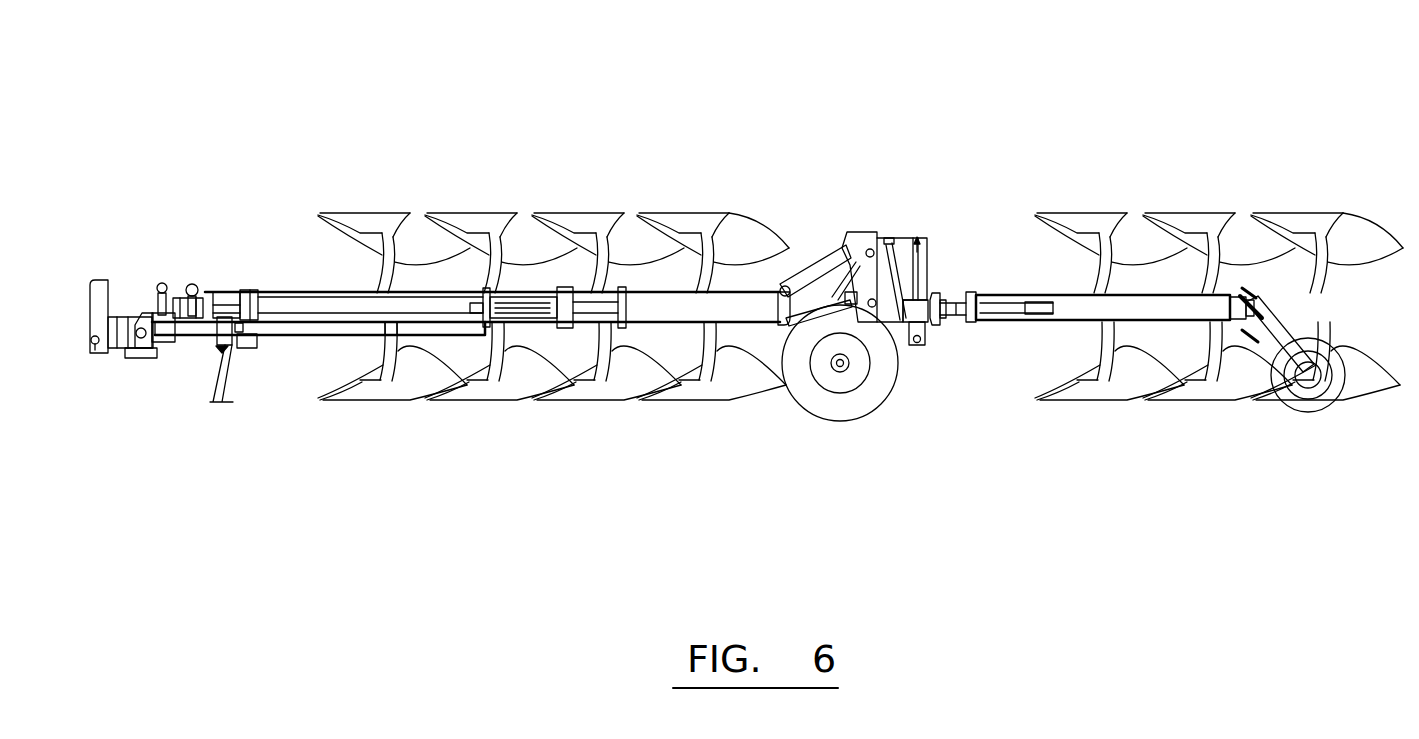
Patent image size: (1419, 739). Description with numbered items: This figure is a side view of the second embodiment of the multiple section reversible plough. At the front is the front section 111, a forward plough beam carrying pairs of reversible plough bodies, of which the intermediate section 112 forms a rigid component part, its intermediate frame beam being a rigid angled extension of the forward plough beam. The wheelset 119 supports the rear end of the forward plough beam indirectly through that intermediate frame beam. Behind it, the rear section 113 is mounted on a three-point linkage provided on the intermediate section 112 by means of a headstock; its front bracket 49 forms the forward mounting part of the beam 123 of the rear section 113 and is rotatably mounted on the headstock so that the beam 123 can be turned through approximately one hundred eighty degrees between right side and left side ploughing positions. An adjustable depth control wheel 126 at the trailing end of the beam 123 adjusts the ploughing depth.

The front section 111 is at (522, 178).
The intermediate section 112 is at (873, 194).
The rear section 113 is at (1209, 189).
The front bracket 49 is at (933, 297).
The wheelset 119 is at (863, 403).
The beam 123 is at (1137, 310).
The depth control wheel 126 is at (1328, 407).